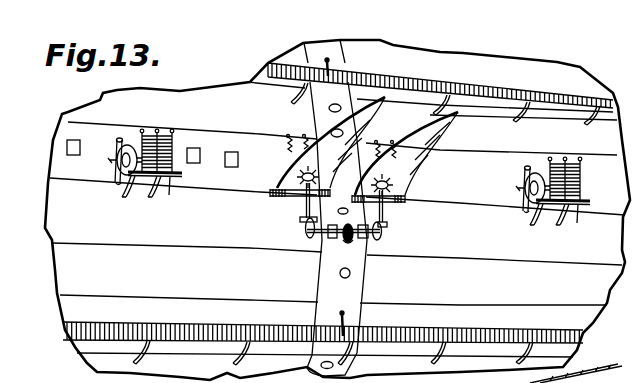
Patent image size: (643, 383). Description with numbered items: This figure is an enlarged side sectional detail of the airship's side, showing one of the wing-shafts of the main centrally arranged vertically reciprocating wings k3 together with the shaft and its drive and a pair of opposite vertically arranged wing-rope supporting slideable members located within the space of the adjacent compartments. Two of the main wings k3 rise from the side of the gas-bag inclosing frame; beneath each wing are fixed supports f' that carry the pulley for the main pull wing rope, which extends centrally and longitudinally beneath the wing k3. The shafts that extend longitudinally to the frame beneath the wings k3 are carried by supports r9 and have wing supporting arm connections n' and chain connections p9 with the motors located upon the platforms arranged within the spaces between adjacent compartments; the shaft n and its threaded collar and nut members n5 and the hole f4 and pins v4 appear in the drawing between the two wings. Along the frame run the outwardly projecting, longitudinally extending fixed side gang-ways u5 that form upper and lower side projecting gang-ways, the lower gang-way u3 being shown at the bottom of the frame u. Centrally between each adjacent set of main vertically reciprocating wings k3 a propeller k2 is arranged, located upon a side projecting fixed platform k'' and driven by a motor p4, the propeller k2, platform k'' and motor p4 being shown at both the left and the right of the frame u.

The beam u is at (613, 145).
The fixed side gang-way u5 is at (430, 79).
The lower comb strip u3 is at (222, 323).
The fixed support f' is at (321, 208).
The hole f4 is at (351, 273).
The pin v4 is at (329, 63).
The main vertically reciprocating wing k3 is at (426, 131).
The shaft n is at (292, 203).
The wing supporting arm connection n' is at (383, 209).
The support r9 is at (362, 238).
The collar nut n5 is at (378, 238).
The chain connection p9 is at (345, 238).
The propeller k2 is at (90, 193).
The motor p4 is at (315, 189).
The side projecting fixed platform k'' is at (357, 207).